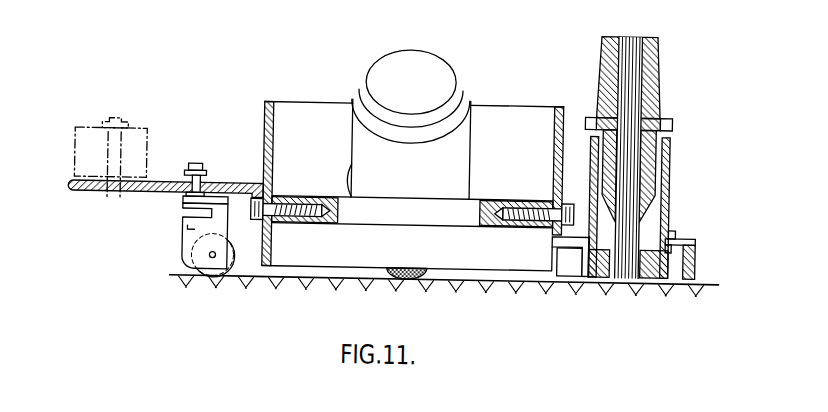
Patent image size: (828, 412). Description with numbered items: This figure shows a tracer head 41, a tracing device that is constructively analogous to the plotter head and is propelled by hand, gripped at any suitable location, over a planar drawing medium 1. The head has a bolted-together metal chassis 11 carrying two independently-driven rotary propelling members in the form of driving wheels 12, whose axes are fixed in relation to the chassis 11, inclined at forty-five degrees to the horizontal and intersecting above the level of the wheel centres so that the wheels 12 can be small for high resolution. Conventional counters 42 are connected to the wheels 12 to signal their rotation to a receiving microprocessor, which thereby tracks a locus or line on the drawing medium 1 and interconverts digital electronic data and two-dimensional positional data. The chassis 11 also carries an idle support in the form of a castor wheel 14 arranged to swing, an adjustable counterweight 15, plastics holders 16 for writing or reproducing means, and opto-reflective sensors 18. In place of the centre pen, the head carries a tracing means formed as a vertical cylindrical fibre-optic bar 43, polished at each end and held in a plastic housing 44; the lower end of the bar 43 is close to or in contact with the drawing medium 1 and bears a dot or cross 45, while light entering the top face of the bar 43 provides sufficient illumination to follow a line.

The planar drawing medium 1 is at (714, 279).
The chassis 11 is at (691, 238).
The driving wheels 12 is at (423, 281).
The castor wheel 14 is at (234, 286).
The counterweight 15 is at (90, 144).
The holders 16 is at (668, 178).
The opto-reflective sensors 18 is at (568, 262).
The tracer head 41 is at (262, 125).
The counters 42 is at (372, 86).
The fibre-optic bundle bar 43 is at (600, 88).
The plastic housing 44 is at (650, 107).
The dot or cross 45 is at (633, 281).